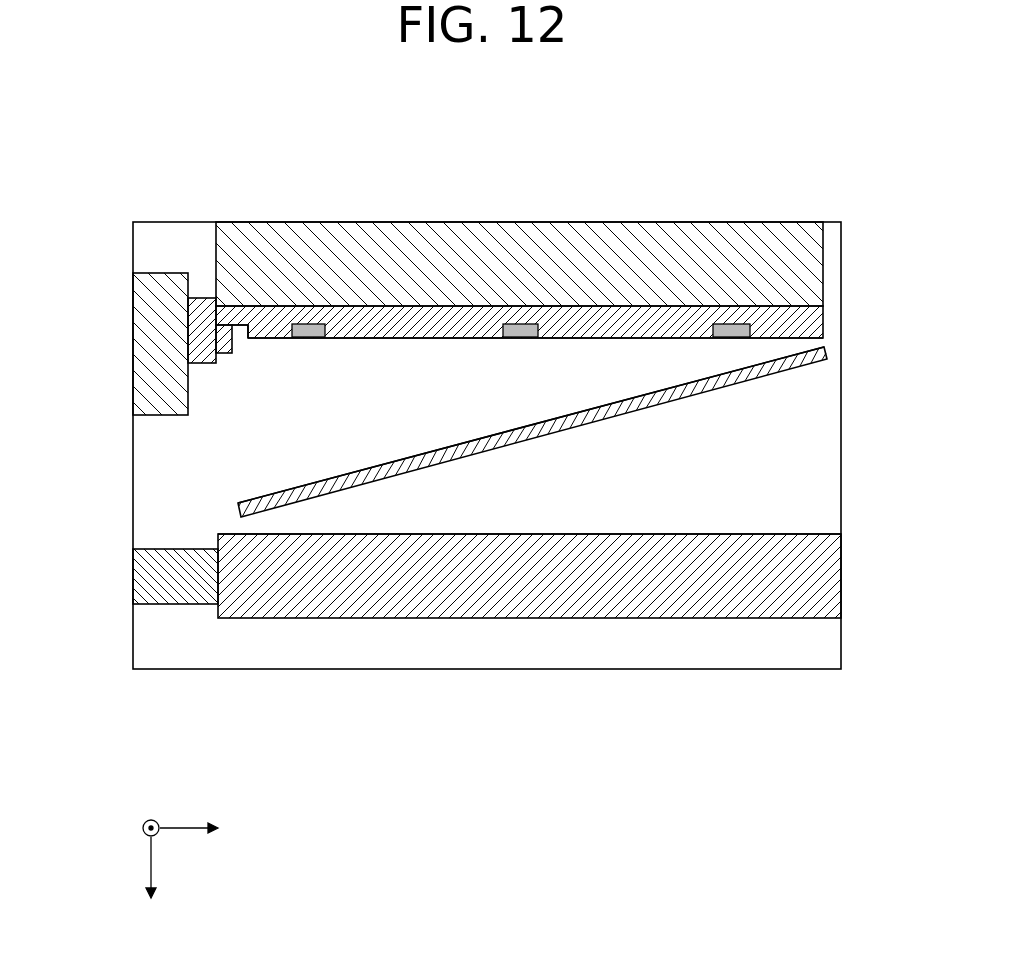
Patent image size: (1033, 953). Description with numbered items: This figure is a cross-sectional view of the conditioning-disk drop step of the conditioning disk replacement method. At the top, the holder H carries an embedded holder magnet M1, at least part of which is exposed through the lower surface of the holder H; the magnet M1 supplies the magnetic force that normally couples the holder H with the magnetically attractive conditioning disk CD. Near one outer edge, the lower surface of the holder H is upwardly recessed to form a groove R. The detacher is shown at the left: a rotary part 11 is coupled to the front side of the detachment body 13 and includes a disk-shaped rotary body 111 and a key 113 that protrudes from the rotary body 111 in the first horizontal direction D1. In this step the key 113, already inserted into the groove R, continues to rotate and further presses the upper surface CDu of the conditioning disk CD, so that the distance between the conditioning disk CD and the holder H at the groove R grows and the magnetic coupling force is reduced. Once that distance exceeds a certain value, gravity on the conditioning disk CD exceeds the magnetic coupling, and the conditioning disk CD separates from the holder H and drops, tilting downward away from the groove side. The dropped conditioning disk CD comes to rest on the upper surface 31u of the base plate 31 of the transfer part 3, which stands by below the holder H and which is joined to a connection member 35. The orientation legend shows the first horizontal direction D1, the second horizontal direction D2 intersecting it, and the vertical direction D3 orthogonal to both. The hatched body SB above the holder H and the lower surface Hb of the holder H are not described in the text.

The transfer part 3 is at (509, 641).
The rotary part 11 is at (223, 238).
The detachment body 13 is at (152, 273).
The rotary body 111 is at (197, 306).
The key 113 is at (224, 335).
The substrate SB is at (825, 265).
The holder H is at (826, 321).
The bottom surface of heat dissipation member Hb is at (377, 337).
The holder magnet M1 is at (518, 326).
The groove R is at (238, 330).
The conditioning disk CD is at (829, 353).
The upper surface of the conditioning disk CDu is at (257, 496).
The connection member 35 is at (140, 577).
The base plate 31 is at (836, 579).
The upper surface of the base plate 31u is at (810, 534).
The first horizontal direction D1 is at (203, 828).
The second horizontal direction D2 is at (152, 814).
The vertical direction D3 is at (152, 882).